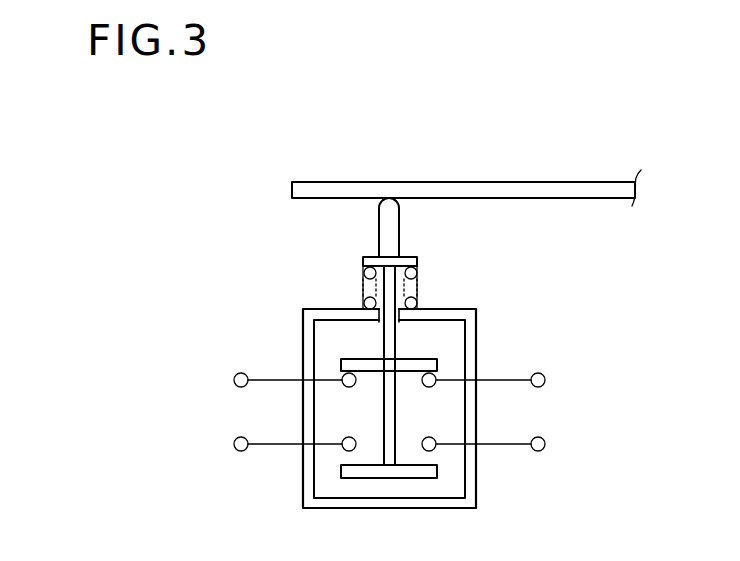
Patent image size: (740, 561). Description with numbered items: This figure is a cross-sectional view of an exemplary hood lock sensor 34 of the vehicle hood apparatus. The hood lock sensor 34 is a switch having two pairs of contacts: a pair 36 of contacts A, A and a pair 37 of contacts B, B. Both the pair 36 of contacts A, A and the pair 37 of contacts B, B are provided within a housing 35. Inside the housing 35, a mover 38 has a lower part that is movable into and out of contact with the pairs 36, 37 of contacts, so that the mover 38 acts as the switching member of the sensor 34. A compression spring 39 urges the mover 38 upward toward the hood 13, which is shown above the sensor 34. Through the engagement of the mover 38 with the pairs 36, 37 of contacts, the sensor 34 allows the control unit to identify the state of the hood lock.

The hood lock sensor 34 is at (181, 186).
The hood 13 is at (458, 180).
The mover 38 is at (379, 226).
The compression spring 39 is at (363, 288).
The housing 35 is at (467, 308).
The pair of contacts A, A 36 is at (355, 385).
The pair of contacts B, B 37 is at (355, 450).